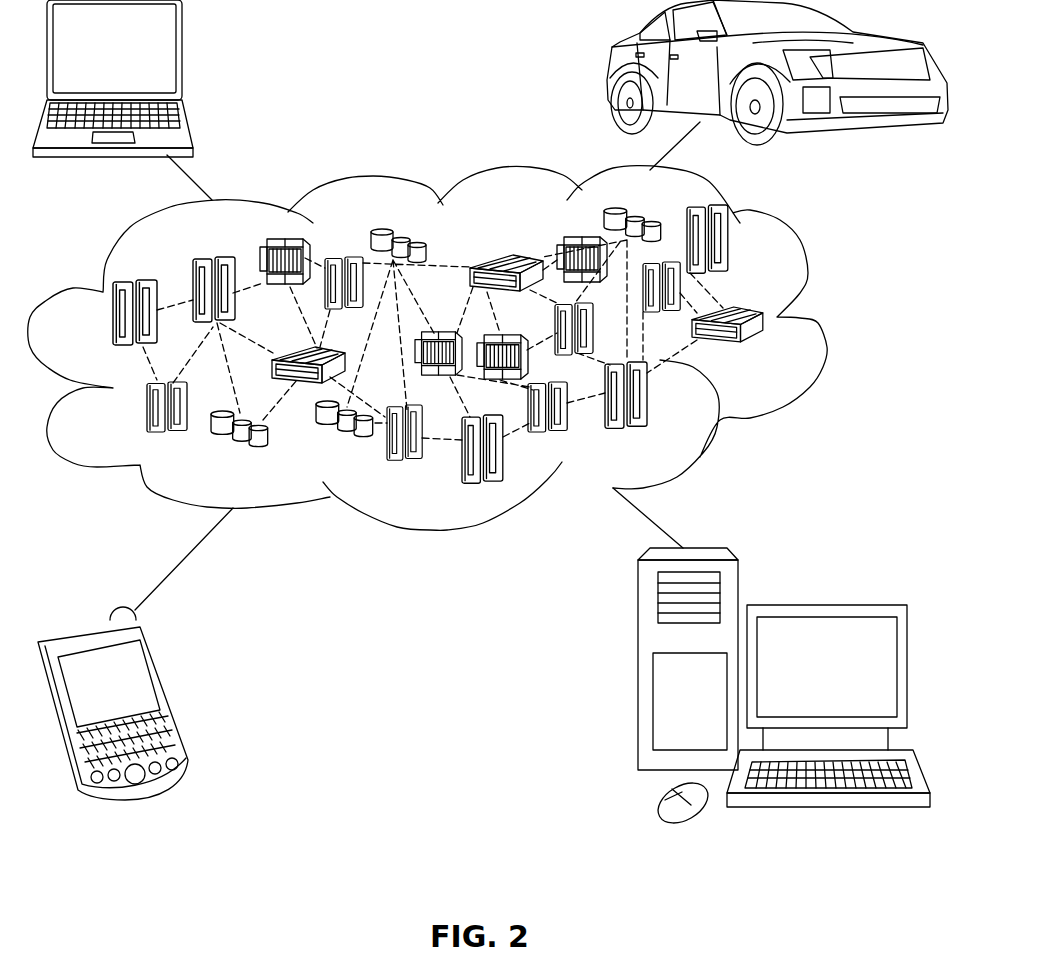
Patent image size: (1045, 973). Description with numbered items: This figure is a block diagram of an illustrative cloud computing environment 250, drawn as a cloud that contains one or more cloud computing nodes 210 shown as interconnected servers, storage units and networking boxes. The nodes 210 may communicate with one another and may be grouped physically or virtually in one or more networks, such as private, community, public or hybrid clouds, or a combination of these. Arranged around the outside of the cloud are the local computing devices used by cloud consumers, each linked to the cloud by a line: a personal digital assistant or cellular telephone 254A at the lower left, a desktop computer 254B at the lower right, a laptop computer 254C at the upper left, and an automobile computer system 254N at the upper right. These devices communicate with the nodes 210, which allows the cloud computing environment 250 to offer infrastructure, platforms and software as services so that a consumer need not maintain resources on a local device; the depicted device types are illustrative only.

The cloud computing environment 250 is at (827, 323).
The cloud computing nodes 210 is at (776, 356).
The personal digital assistant (PDA) or cellular telephone 254A is at (173, 695).
The desktop computer 254B is at (825, 604).
The laptop computer 254C is at (182, 58).
The automobile computer system 254N is at (607, 72).